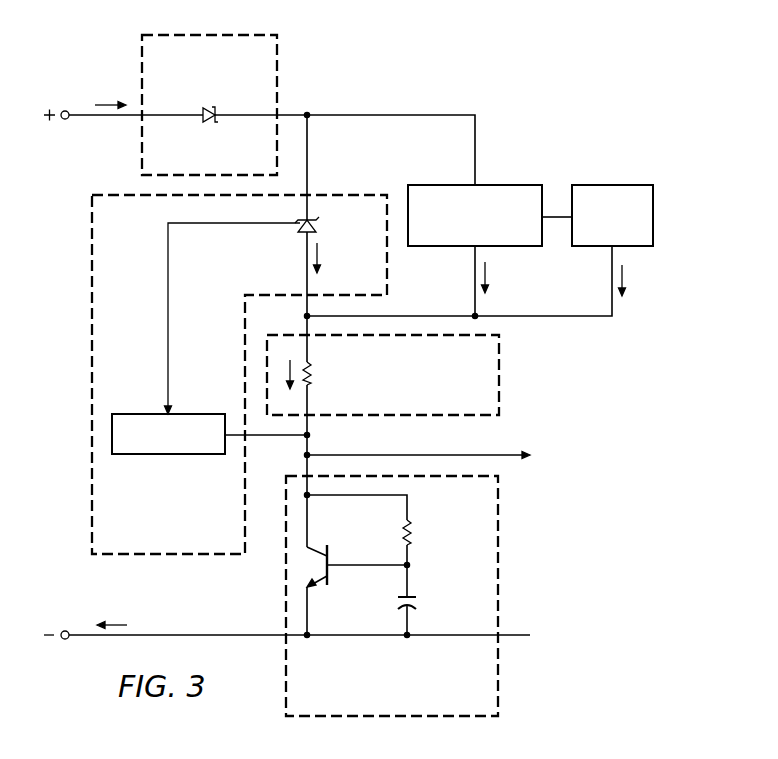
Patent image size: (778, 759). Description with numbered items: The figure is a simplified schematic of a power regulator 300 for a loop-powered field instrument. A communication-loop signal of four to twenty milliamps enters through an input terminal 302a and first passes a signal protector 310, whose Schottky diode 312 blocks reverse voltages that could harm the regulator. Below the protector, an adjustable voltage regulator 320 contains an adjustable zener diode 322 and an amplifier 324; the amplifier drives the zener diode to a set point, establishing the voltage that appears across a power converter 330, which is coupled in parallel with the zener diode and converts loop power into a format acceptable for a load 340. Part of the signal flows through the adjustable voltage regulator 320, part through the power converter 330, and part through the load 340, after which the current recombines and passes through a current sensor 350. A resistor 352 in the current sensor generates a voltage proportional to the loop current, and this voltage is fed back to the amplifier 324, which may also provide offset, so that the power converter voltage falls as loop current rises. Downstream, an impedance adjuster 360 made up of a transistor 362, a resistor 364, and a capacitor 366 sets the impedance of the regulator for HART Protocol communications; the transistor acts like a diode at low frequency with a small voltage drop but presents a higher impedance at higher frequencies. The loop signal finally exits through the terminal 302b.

The power regulator 300 is at (541, 87).
The input terminal 302a is at (65, 110).
The terminal 302b is at (65, 630).
The signal protector 310 is at (283, 75).
The Schottky diode 312 is at (212, 120).
The adjustable voltage regulator 320 is at (82, 268).
The adjustable zener diode 322 is at (316, 221).
The amplifier 324 is at (142, 412).
The power converter 330 is at (505, 183).
The load 340 is at (624, 183).
The current sensor 350 is at (506, 354).
The resistor 352 is at (316, 378).
The impedance adjuster 360 is at (508, 557).
The transistor 362 is at (333, 573).
The resistor 364 is at (413, 528).
The capacitor 366 is at (419, 603).